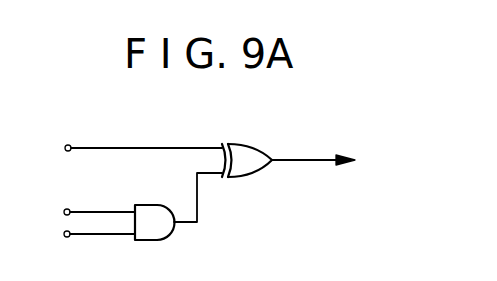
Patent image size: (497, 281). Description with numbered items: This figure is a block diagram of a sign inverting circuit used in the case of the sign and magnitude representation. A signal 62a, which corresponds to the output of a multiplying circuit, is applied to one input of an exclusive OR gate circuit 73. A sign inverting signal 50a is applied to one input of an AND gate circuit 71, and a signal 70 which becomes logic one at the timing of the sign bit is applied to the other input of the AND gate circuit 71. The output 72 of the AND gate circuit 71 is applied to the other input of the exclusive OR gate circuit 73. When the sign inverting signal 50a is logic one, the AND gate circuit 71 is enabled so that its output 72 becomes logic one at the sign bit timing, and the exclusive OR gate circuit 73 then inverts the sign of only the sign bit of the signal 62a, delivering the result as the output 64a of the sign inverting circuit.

The signal 62a is at (118, 148).
The sign inverting signal 50a is at (103, 198).
The signal 70 is at (110, 234).
The AND gate circuit 71 is at (156, 207).
The output 72 is at (200, 205).
The exclusive OR gate circuit 73 is at (258, 155).
The output 64a is at (318, 160).